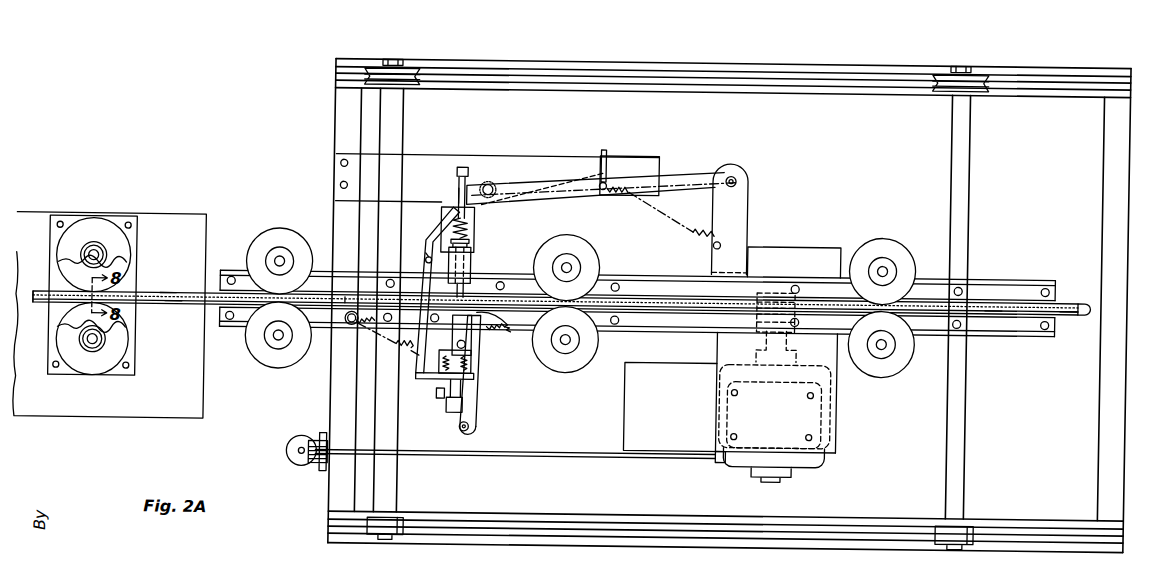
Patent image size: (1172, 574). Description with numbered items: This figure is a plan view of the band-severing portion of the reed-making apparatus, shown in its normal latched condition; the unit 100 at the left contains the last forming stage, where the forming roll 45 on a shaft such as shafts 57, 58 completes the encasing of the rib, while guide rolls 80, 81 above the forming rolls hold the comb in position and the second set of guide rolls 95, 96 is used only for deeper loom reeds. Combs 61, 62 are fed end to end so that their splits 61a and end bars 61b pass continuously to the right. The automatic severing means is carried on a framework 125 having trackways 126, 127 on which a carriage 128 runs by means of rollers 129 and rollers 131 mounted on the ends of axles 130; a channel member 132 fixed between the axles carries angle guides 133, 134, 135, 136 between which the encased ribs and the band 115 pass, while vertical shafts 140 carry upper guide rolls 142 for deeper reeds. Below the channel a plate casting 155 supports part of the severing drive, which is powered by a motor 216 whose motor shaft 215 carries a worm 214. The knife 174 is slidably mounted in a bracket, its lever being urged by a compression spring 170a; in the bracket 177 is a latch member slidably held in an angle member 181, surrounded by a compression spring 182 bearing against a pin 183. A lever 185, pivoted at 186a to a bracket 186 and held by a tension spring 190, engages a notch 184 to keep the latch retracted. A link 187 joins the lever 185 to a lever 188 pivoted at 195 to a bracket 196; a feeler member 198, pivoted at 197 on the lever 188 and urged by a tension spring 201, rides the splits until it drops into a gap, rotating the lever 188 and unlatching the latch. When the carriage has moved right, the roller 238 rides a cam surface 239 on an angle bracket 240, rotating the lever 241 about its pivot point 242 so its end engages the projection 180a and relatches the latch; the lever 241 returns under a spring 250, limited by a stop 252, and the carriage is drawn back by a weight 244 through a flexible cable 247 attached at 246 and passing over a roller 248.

The feed unit housing 100 is at (39, 221).
The shaft 57 is at (102, 256).
The shaft 58 is at (96, 347).
The guide roll 95 is at (122, 251).
The guide roll 96 is at (126, 354).
The guide roll 80 is at (120, 278).
The guide roll 81 is at (120, 324).
The comb 62 is at (173, 293).
The forming roll 45 is at (172, 305).
The comb 61 is at (1068, 293).
The splits 61a is at (40, 300).
The end bars 61b is at (1090, 304).
The rack teeth 115 is at (992, 309).
The angle guide 133 is at (238, 280).
The angle guide 134 is at (238, 323).
The angle guide 135 is at (675, 292).
The angle guide 136 is at (668, 327).
The channel member 132 is at (1027, 274).
The vertical shaft 140 is at (281, 266).
The upper guide roll 142 is at (289, 236).
The tension spring 190 is at (359, 329).
The lever 185 is at (436, 232).
The notch 184 is at (451, 197).
The bracket 186 is at (427, 248).
The pivot 186a is at (427, 259).
The projection 180a is at (457, 167).
The angle member 181 is at (471, 225).
The compression spring 182 is at (468, 235).
The pin 183 is at (470, 248).
The bracket 177 is at (470, 261).
The knife 174 is at (437, 397).
The link 187 is at (440, 392).
The tension spring 201 is at (491, 346).
The compression spring 170a is at (478, 375).
The lever 188 is at (482, 405).
The bracket 196 is at (485, 431).
The pivot 195 is at (461, 430).
The feeler member 198 is at (505, 323).
The pivot 197 is at (490, 333).
The roller 238 is at (488, 187).
The cam surface 239 is at (552, 184).
The angle bracket 240 is at (636, 162).
The lever 241 is at (698, 177).
The pivot point 242 is at (738, 173).
The spring 250 is at (613, 202).
The stop 252 is at (604, 153).
The plate casting 155 is at (784, 248).
The worm 214 is at (770, 289).
The motor shaft 215 is at (789, 342).
The motor 216 is at (833, 379).
The cable connection 246 is at (719, 459).
The flexible cable 247 is at (587, 453).
The weight 244 is at (292, 456).
The roller 248 is at (314, 444).
The trackway 126 is at (753, 65).
The trackway 127 is at (602, 522).
The carriage 128 is at (412, 483).
The framework 125 is at (1129, 453).
The axle 130 is at (400, 127).
The roller 129 is at (408, 68).
The roller 131 is at (404, 545).